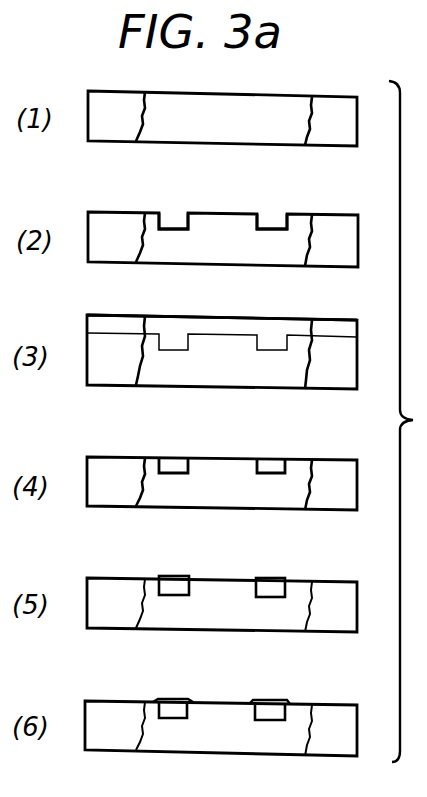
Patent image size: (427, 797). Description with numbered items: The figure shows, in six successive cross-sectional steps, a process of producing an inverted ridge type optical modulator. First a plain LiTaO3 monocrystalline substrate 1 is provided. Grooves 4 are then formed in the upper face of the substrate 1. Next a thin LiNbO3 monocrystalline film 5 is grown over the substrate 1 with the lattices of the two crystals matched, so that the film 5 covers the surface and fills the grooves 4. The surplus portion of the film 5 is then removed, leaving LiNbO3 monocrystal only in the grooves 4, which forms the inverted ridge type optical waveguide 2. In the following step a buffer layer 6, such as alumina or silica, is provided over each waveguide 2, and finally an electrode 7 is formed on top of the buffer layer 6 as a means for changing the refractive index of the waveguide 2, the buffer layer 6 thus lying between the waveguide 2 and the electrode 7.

The LiTaO3 monocrystalline substrate 1 is at (342, 118).
The grooves 4 is at (273, 222).
The thin LiNbO3 monocrystalline film 5 is at (338, 328).
The inverted ridge type optical waveguide 2 is at (272, 466).
The buffer layer 6 is at (261, 578).
The electrode 7 is at (258, 700).